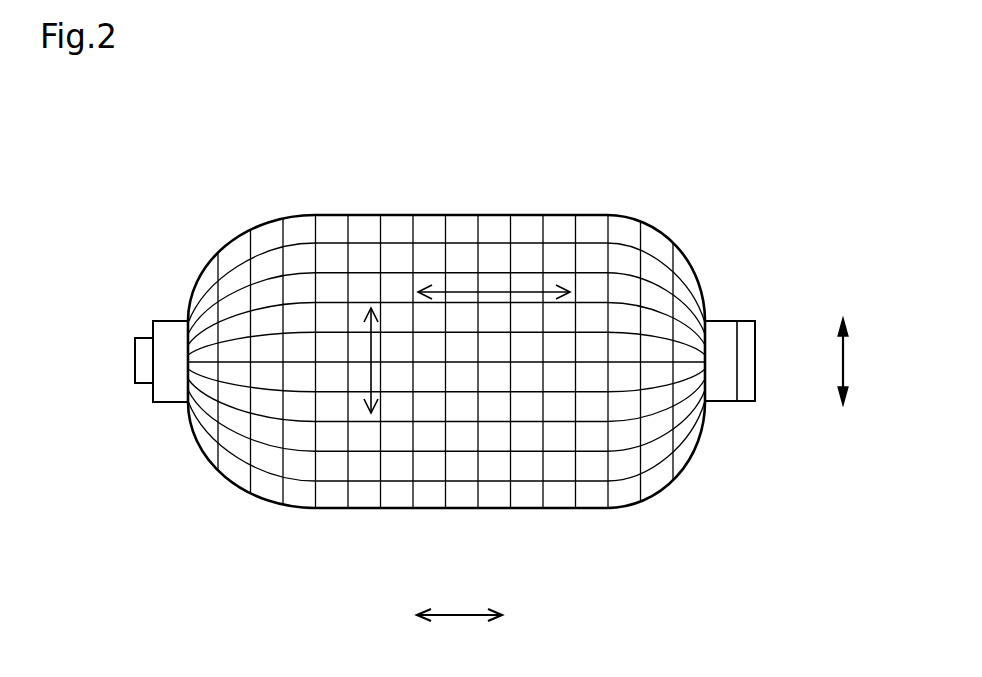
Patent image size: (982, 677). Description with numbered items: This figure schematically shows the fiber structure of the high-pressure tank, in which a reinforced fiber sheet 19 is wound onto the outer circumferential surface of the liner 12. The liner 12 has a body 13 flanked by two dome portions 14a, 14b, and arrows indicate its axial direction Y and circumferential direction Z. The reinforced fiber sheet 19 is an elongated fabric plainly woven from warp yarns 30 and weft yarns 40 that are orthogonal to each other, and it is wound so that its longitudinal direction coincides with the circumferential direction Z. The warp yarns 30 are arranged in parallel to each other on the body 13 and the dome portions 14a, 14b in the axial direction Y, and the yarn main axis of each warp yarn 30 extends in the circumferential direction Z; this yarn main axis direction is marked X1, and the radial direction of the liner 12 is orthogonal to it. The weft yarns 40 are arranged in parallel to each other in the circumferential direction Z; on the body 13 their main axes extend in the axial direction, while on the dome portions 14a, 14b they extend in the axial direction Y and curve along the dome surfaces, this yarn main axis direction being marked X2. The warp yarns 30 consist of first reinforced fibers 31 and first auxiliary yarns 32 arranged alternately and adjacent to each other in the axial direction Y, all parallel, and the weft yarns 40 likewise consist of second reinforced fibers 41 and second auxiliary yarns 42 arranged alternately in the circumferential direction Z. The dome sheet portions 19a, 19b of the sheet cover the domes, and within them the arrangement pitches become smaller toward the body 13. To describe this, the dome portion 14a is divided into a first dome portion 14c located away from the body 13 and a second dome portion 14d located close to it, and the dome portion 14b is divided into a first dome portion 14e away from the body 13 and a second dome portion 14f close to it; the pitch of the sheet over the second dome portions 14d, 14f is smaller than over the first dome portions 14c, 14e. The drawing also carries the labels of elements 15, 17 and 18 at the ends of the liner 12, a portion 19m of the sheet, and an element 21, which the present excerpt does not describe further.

The liner 12 is at (688, 258).
The body 13 is at (595, 520).
The dome portion 14a is at (707, 520).
The dome portion 14b is at (320, 520).
The first dome portion 14c is at (707, 582).
The second dome portion 14d is at (648, 582).
The first dome portion 14e is at (252, 582).
The second dome portion 14f is at (320, 582).
The boss 15 is at (170, 321).
The valve-side cap 17 is at (135, 366).
The end cap 18 is at (755, 388).
The reinforced fiber sheet 19 is at (650, 227).
The dome sheet portion 19a is at (642, 480).
The dome sheet portion 19b is at (250, 478).
The middle reinforcing region 19m is at (395, 223).
The fiber layer 21 is at (594, 146).
The warp yarns 30 is at (479, 293).
The first reinforced fibers 31 is at (443, 232).
The first auxiliary yarns 32 is at (480, 227).
The weft yarns 40 is at (502, 203).
The second reinforced fibers 41 is at (588, 230).
The second auxiliary yarns 42 is at (527, 273).
The yarn main axis direction of warp yarn X1 is at (371, 345).
The yarn main axis direction of weft yarns X2 is at (495, 292).
The axial direction Y is at (460, 617).
The circumferential direction Z is at (846, 353).